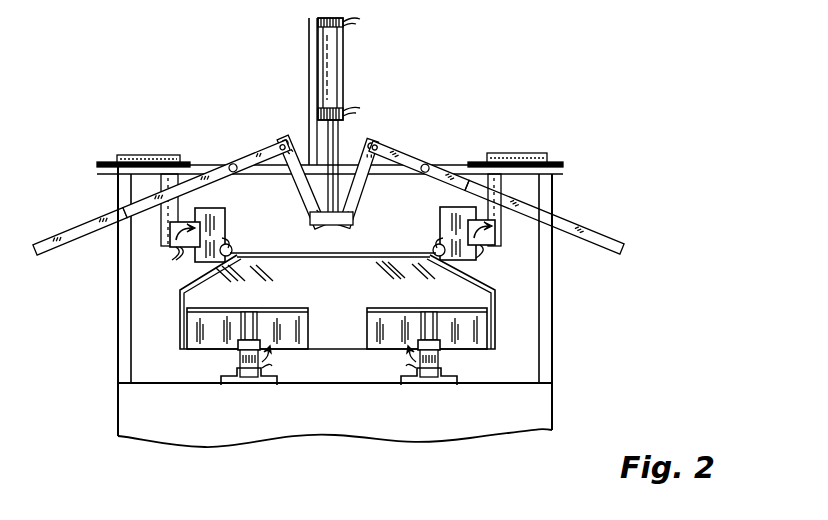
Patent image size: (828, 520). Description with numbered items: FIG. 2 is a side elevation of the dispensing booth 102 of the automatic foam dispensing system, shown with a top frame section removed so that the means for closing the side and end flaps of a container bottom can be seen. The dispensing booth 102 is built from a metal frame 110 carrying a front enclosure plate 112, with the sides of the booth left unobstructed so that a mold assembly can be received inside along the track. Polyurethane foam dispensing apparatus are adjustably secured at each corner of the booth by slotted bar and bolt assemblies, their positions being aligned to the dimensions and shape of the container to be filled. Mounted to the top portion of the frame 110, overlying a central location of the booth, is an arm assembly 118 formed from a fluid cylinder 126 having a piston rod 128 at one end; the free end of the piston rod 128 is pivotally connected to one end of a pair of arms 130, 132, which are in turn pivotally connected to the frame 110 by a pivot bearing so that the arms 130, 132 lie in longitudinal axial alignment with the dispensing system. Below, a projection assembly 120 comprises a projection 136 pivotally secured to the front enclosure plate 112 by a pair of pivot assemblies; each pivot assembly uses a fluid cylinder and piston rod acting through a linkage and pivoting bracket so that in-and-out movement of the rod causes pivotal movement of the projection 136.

The dispensing booth 102 is at (556, 313).
The metal frame 110 is at (120, 320).
The front enclosure plate 112 is at (541, 400).
The arm assembly 118 is at (345, 45).
The projection assembly 120 is at (343, 341).
The fluid cylinder 126 is at (325, 96).
The piston rod 128 is at (338, 152).
The arm 130 is at (576, 223).
The arm 132 is at (84, 206).
The projection 136 is at (372, 270).